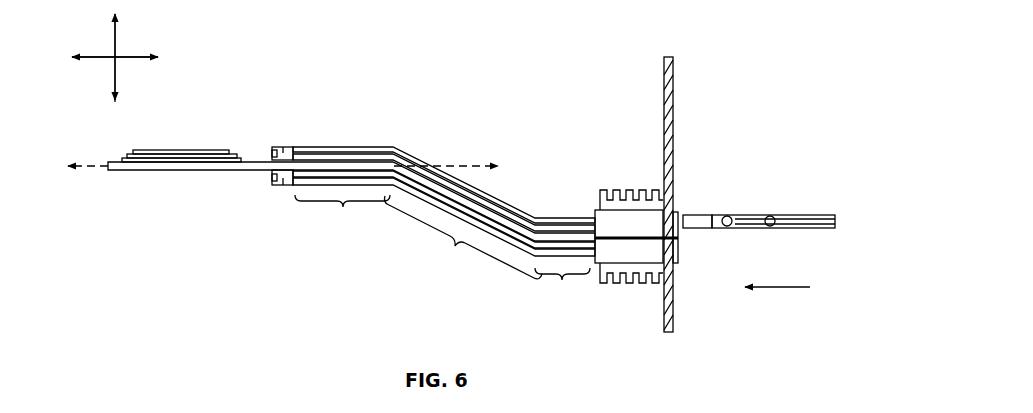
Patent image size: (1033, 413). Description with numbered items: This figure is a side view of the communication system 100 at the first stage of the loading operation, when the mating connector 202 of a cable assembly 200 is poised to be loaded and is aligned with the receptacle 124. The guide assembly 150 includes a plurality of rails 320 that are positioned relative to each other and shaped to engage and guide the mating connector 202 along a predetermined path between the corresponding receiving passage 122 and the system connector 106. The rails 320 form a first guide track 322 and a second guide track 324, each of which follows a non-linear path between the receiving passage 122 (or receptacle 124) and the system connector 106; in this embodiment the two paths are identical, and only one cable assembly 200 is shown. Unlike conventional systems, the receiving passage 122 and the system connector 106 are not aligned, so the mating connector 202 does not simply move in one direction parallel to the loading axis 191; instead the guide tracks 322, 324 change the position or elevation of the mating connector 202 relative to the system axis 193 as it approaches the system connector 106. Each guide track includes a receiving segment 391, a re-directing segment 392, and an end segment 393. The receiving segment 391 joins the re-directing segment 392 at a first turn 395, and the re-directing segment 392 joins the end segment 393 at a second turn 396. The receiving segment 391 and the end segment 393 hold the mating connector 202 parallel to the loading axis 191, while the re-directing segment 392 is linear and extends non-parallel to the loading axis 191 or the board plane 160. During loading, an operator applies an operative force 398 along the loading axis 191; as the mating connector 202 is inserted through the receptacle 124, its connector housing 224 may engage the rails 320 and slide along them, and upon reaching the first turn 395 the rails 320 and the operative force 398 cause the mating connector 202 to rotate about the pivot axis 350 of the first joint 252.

The communication system 100 is at (717, 67).
The system connector 106 is at (280, 146).
The receiving passage 122 is at (677, 207).
The receptacle 124 is at (612, 210).
The guide assembly 150 is at (366, 200).
The board plane 160 is at (84, 166).
The loading axis 191 is at (138, 60).
The system axis 193 is at (117, 38).
The cable assembly 200 is at (766, 194).
The mating connector 202 is at (748, 202).
The connector housing 224 is at (697, 229).
The first joint 252 is at (771, 234).
The rails 320 is at (351, 237).
The first guide track 322 is at (455, 158).
The second guide track 324 is at (481, 260).
The pivot axis 350 is at (770, 212).
The receiving segment 391 is at (562, 285).
The re-directing segment 392 is at (464, 237).
The end segment 393 is at (342, 213).
The first turn 395 is at (544, 204).
The second turn 396 is at (397, 141).
The operative force 398 is at (780, 288).